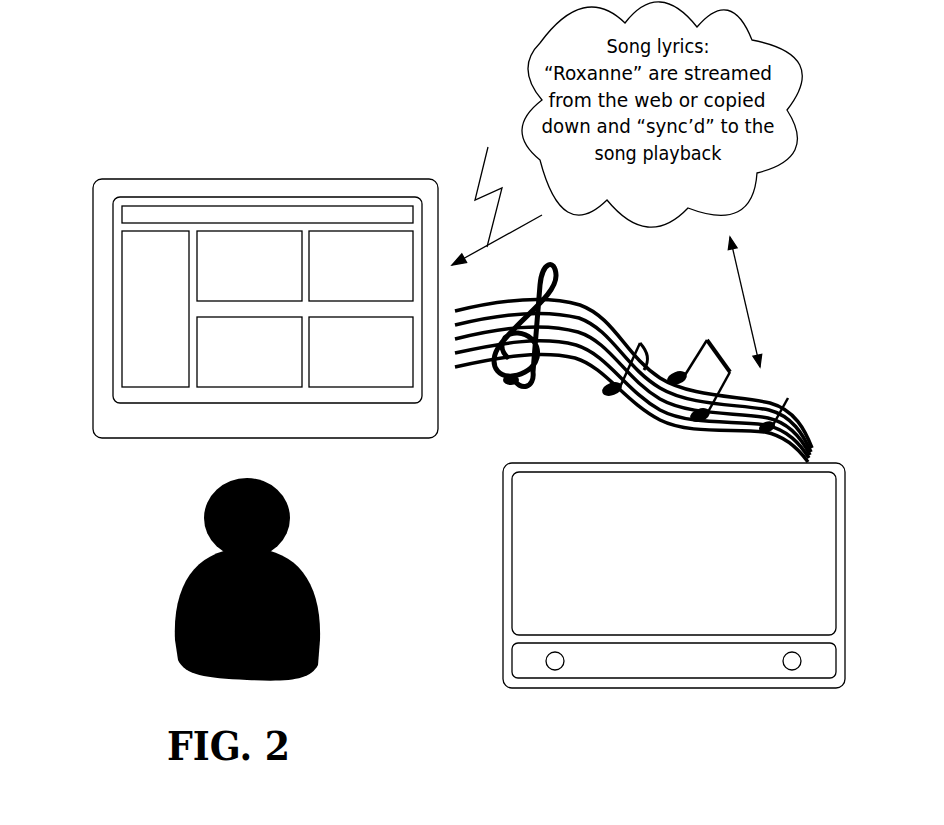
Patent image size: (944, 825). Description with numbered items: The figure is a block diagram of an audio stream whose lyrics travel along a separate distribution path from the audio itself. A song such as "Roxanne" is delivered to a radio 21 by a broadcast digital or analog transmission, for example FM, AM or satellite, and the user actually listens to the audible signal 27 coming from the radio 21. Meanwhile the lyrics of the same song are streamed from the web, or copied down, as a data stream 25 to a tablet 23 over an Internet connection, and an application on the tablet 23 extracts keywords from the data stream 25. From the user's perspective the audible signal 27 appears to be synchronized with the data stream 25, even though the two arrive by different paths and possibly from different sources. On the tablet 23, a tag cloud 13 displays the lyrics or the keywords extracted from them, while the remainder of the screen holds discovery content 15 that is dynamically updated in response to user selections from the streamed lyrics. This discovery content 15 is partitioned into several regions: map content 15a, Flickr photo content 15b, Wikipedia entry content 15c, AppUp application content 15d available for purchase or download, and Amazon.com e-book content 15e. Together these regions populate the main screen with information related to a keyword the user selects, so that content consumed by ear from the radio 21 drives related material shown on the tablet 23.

The tag cloud 13 is at (120, 216).
The discovery content 15 is at (85, 330).
The map content 15a is at (155, 309).
The Flickr photo content 15b is at (249, 266).
The Wikipedia entry content 15c is at (361, 266).
The AppUp application content 15d is at (249, 352).
The Amazon.com e-book content 15e is at (361, 352).
The radio 21 is at (503, 575).
The tablet 23 is at (302, 197).
The data stream 25 is at (497, 191).
The audible signal 27 is at (588, 305).